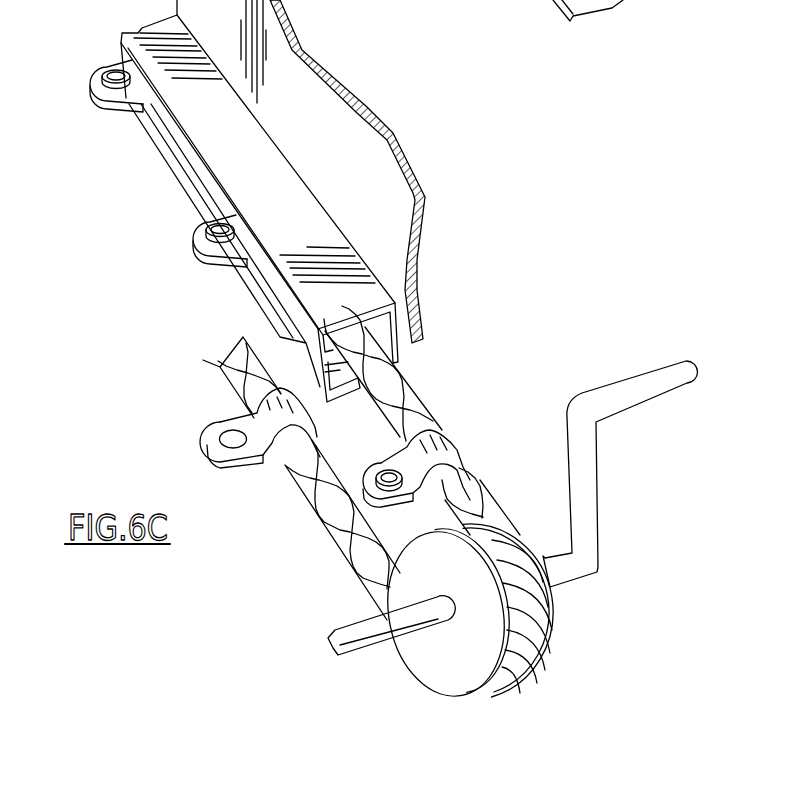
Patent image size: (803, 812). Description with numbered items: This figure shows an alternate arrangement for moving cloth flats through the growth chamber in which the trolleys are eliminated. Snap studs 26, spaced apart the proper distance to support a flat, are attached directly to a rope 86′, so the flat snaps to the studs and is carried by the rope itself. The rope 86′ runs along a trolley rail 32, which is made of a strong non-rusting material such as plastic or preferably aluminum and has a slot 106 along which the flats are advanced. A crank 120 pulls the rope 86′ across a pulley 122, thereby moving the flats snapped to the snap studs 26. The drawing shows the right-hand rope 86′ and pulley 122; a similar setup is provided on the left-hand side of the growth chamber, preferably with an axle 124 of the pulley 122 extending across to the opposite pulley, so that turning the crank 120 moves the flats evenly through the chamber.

The snap studs 26 is at (96, 73).
The trolley rail 32 is at (290, 196).
The slot 106 is at (385, 333).
The rope 86′ is at (420, 410).
The crank 120 is at (600, 483).
The pulley 122 is at (557, 620).
The axle 124 is at (353, 627).